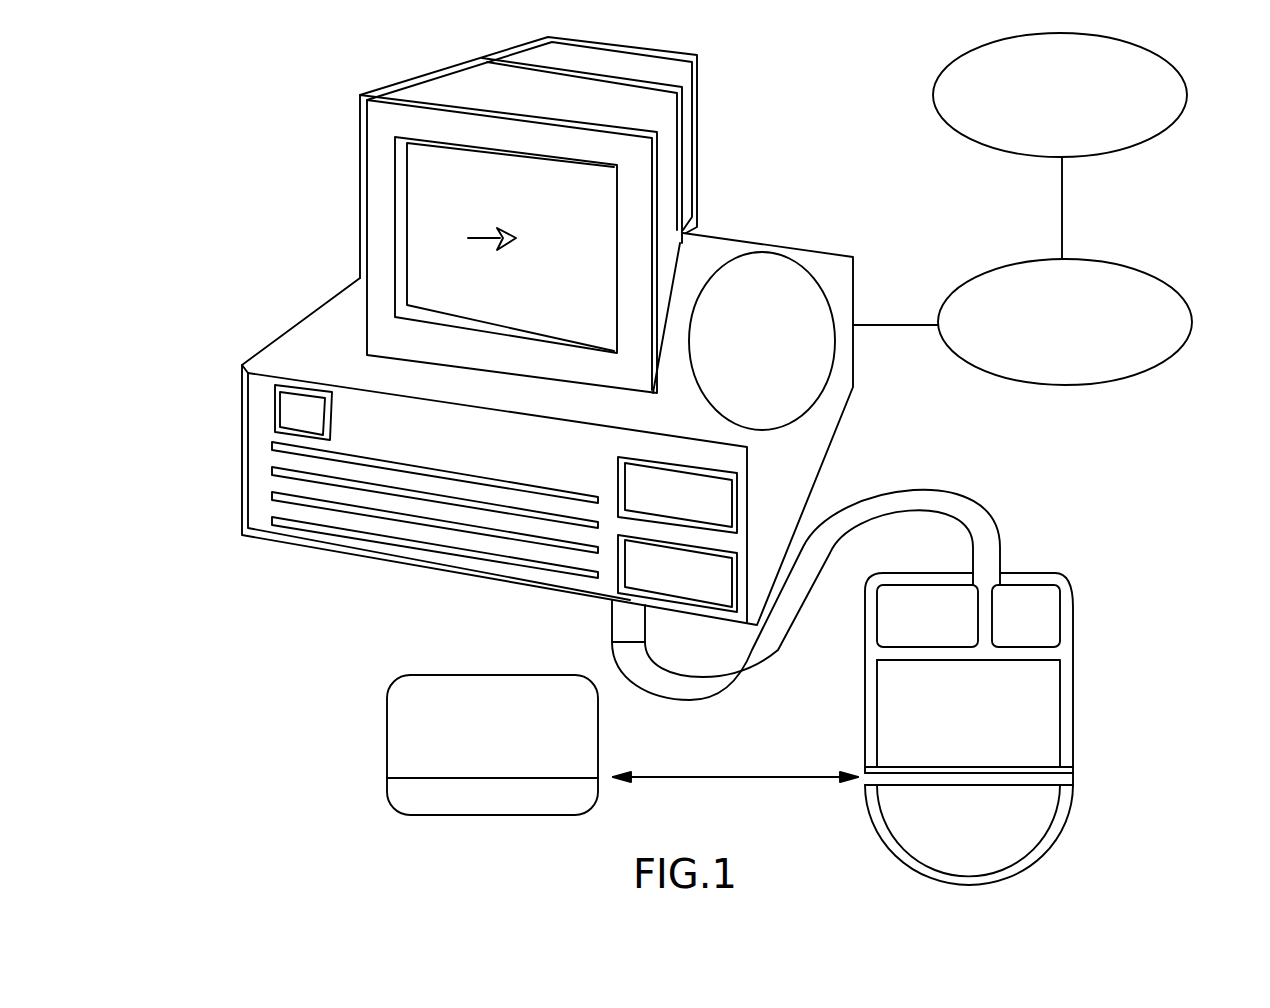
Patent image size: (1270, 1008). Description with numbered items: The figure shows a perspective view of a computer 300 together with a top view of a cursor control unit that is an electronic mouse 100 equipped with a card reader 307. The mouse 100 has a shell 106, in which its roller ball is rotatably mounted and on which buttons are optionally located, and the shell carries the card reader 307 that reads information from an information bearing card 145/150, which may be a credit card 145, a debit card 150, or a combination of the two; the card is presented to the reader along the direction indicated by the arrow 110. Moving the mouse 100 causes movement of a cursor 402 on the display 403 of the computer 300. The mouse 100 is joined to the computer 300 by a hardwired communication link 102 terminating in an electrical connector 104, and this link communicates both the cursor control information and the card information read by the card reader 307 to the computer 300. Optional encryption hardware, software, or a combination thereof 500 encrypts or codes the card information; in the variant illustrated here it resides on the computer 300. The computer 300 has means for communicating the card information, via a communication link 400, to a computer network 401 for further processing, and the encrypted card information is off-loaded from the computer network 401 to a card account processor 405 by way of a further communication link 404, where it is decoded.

The electronic mouse 100 is at (983, 729).
The hardwired communication link 102 is at (668, 700).
The electrical connector 104 is at (610, 630).
The shell 106 is at (910, 628).
The card insertion direction arrow 110 is at (658, 780).
The credit card 145 is at (486, 766).
The debit card 150 is at (407, 817).
The computer 300 is at (818, 452).
The card reader 307 is at (1073, 773).
The communication link 400 is at (912, 327).
The computer network 401 is at (1003, 378).
The cursor 402 is at (487, 240).
The display 403 is at (697, 113).
The communication link 404 is at (1062, 198).
The card account processor 405 is at (985, 147).
The optional encryption hardware, software or combination thereof 500 is at (702, 396).